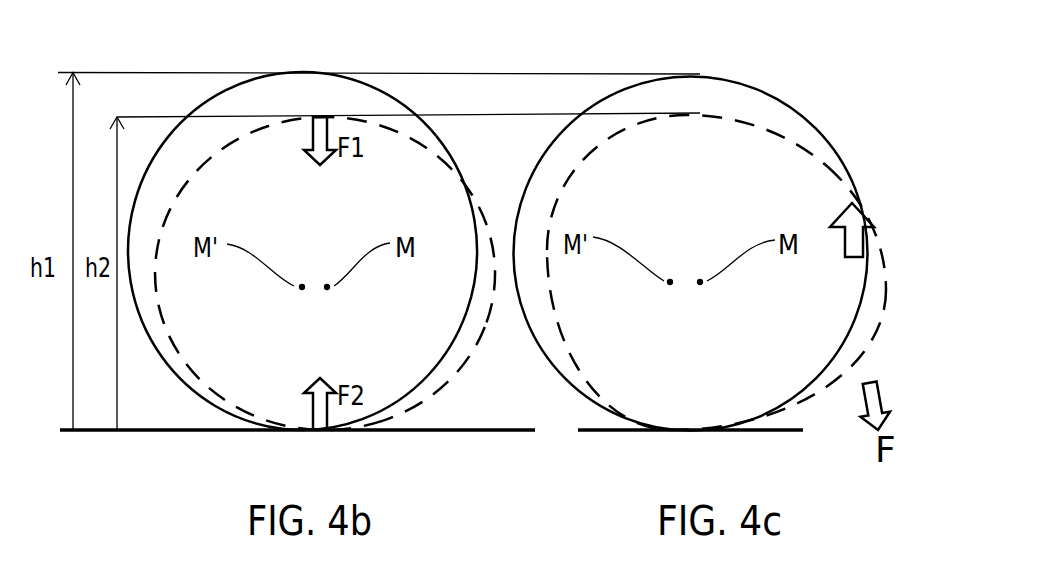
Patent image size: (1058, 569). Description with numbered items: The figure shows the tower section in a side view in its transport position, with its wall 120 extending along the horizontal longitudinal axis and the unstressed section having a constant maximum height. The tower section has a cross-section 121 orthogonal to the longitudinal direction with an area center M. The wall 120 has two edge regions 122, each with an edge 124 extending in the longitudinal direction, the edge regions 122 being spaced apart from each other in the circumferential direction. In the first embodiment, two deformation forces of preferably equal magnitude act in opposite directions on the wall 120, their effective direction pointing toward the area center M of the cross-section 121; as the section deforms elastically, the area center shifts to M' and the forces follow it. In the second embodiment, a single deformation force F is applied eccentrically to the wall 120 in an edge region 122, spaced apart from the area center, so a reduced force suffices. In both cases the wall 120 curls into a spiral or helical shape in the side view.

In FIG. 4b, the wall 120 is at (258, 82).
In FIG. 4c, the wall 120 is at (790, 105).
In FIG. 4b, the cross-section 121 is at (392, 167).
In FIG. 4c, the cross-section 121 is at (800, 195).
In FIG. 4b, the edge region 122 is at (482, 370).
In FIG. 4c, the edge region 122 is at (870, 372).
In FIG. 4b, the edge 124 is at (479, 262).
In FIG. 4c, the edge 124 is at (885, 275).